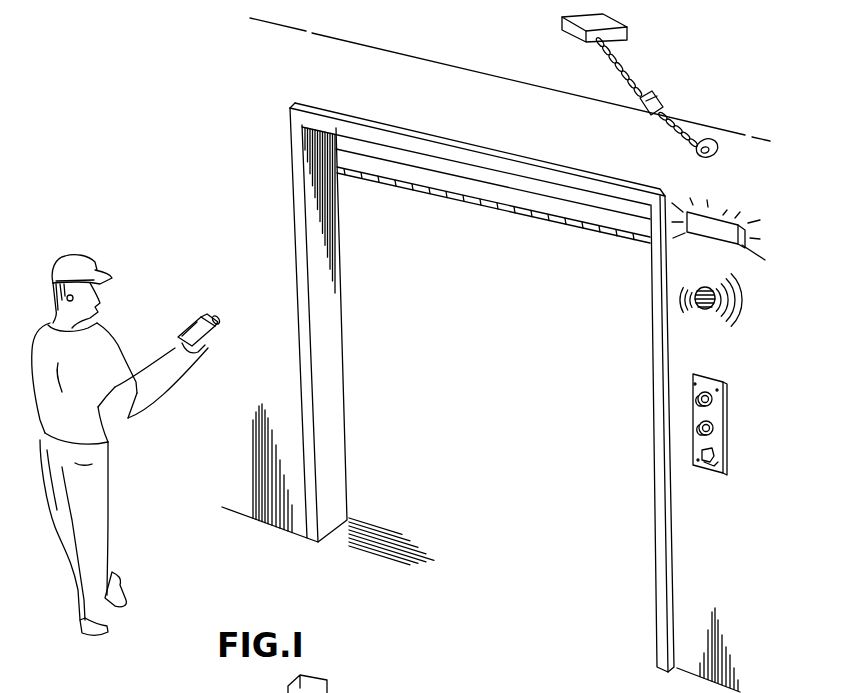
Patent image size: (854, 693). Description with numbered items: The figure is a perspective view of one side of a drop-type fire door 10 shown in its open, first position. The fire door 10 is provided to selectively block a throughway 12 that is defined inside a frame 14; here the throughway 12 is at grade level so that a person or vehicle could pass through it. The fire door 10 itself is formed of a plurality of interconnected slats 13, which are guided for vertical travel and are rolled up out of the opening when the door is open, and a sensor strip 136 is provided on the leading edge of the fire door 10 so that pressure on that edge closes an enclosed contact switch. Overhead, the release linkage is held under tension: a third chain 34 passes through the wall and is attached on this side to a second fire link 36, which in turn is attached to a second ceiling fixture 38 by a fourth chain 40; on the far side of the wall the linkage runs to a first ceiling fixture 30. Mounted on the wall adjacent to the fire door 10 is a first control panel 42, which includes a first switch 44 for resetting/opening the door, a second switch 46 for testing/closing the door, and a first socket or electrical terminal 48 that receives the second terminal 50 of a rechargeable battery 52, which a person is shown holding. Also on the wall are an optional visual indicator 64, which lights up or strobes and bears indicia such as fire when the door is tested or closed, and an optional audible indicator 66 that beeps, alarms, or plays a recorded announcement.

The fire door 10 is at (279, 228).
The throughway 12 is at (517, 586).
The slats 13 is at (430, 178).
The frame 14 is at (300, 323).
The first ceiling fixture 30 is at (330, 686).
The third chain 34 is at (688, 143).
The second fire link 36 is at (648, 118).
The second ceiling fixture 38 is at (628, 28).
The fourth chain 40 is at (625, 82).
The first control panel 42 is at (717, 473).
The first switch 44 is at (707, 395).
The second switch 46 is at (712, 427).
The first socket or electrical terminal 48 is at (713, 455).
The second terminal 50 is at (210, 316).
The rechargeable battery 52 is at (185, 323).
The visual indicators 64 is at (742, 223).
The audible indicators 66 is at (717, 290).
The sensor strip 136 is at (455, 197).